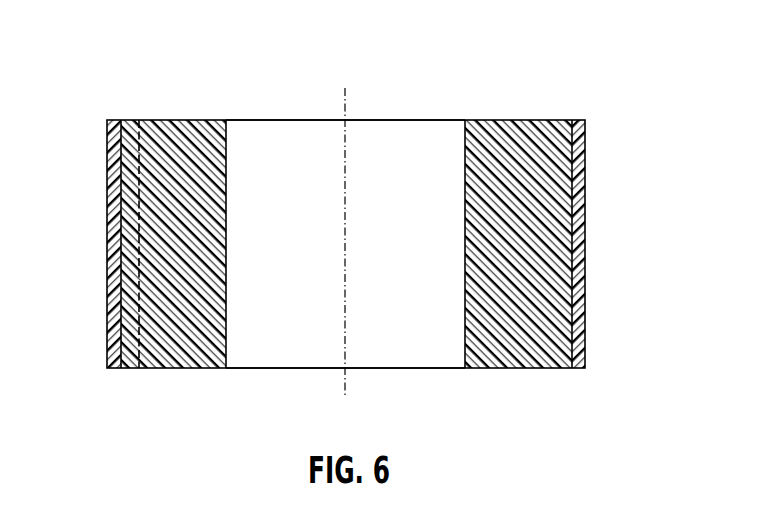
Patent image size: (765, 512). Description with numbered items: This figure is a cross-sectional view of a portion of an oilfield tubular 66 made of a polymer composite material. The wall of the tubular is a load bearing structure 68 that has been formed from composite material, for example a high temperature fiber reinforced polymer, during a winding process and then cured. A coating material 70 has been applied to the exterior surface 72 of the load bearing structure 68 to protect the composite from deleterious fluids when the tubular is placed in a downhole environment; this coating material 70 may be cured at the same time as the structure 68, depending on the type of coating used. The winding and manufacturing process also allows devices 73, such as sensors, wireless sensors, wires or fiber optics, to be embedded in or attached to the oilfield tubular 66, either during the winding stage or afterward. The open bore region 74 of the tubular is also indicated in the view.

The oilfield tubular 66 is at (143, 73).
The load bearing structure 68 is at (170, 368).
The coating material 70 is at (580, 120).
The exterior surface 72 is at (574, 200).
The devices 73 is at (138, 247).
The inner bore 74 is at (465, 196).